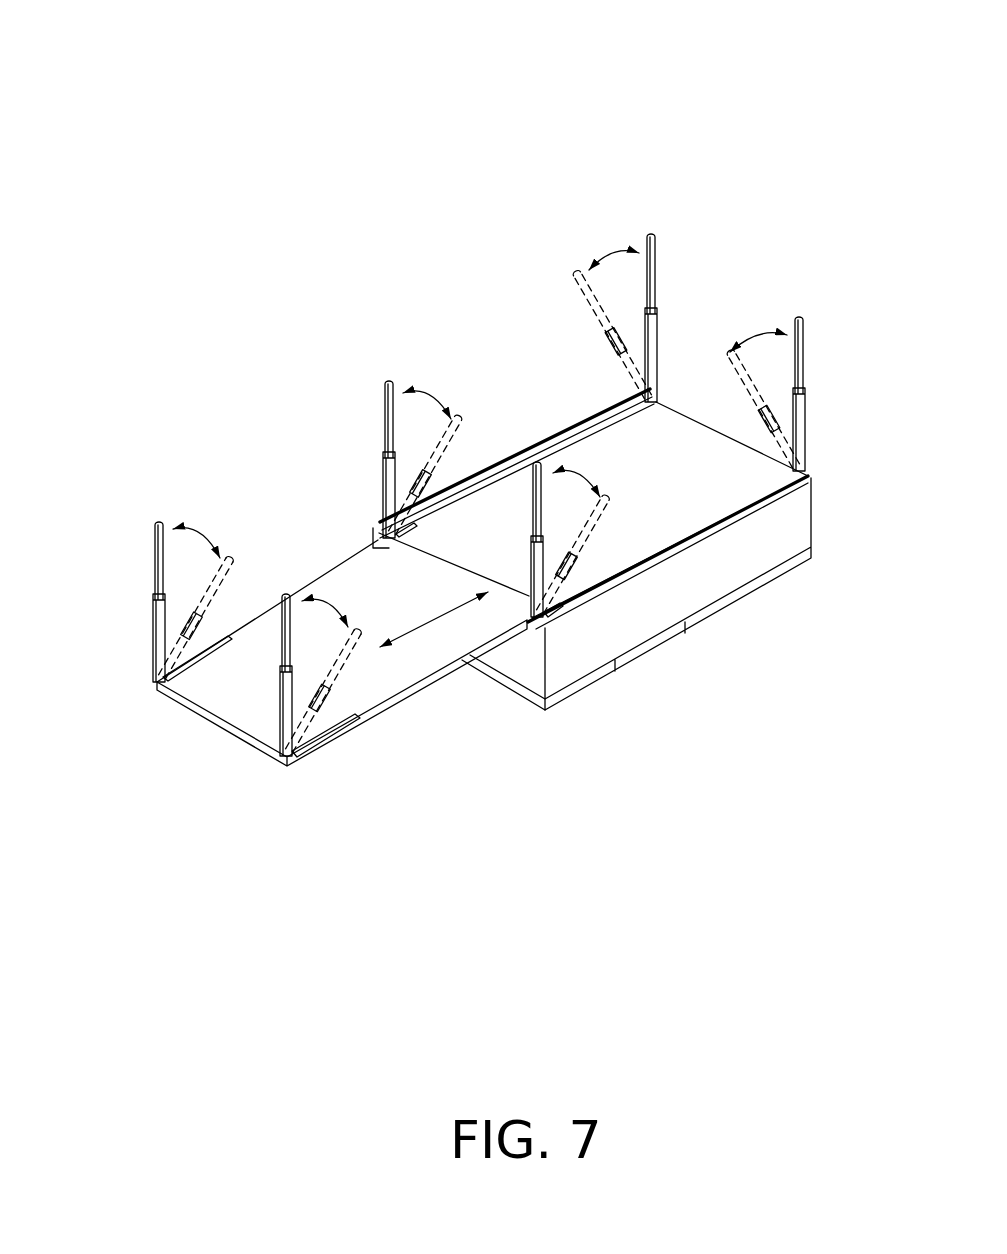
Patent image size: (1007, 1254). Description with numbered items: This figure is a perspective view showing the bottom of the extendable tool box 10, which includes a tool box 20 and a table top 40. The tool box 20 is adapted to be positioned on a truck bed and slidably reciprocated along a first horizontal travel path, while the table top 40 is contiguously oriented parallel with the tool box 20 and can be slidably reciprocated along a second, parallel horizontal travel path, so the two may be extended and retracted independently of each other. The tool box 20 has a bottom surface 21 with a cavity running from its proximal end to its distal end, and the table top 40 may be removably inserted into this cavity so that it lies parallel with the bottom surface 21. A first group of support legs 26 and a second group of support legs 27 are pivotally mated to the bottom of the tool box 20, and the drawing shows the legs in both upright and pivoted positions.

The extendable tool box 10 is at (350, 88).
The tool box 20 is at (827, 507).
The bottom surface 21 is at (653, 467).
The first group of support legs 26 is at (389, 381).
The second group of support legs 27 is at (283, 642).
The table top 40 is at (375, 682).